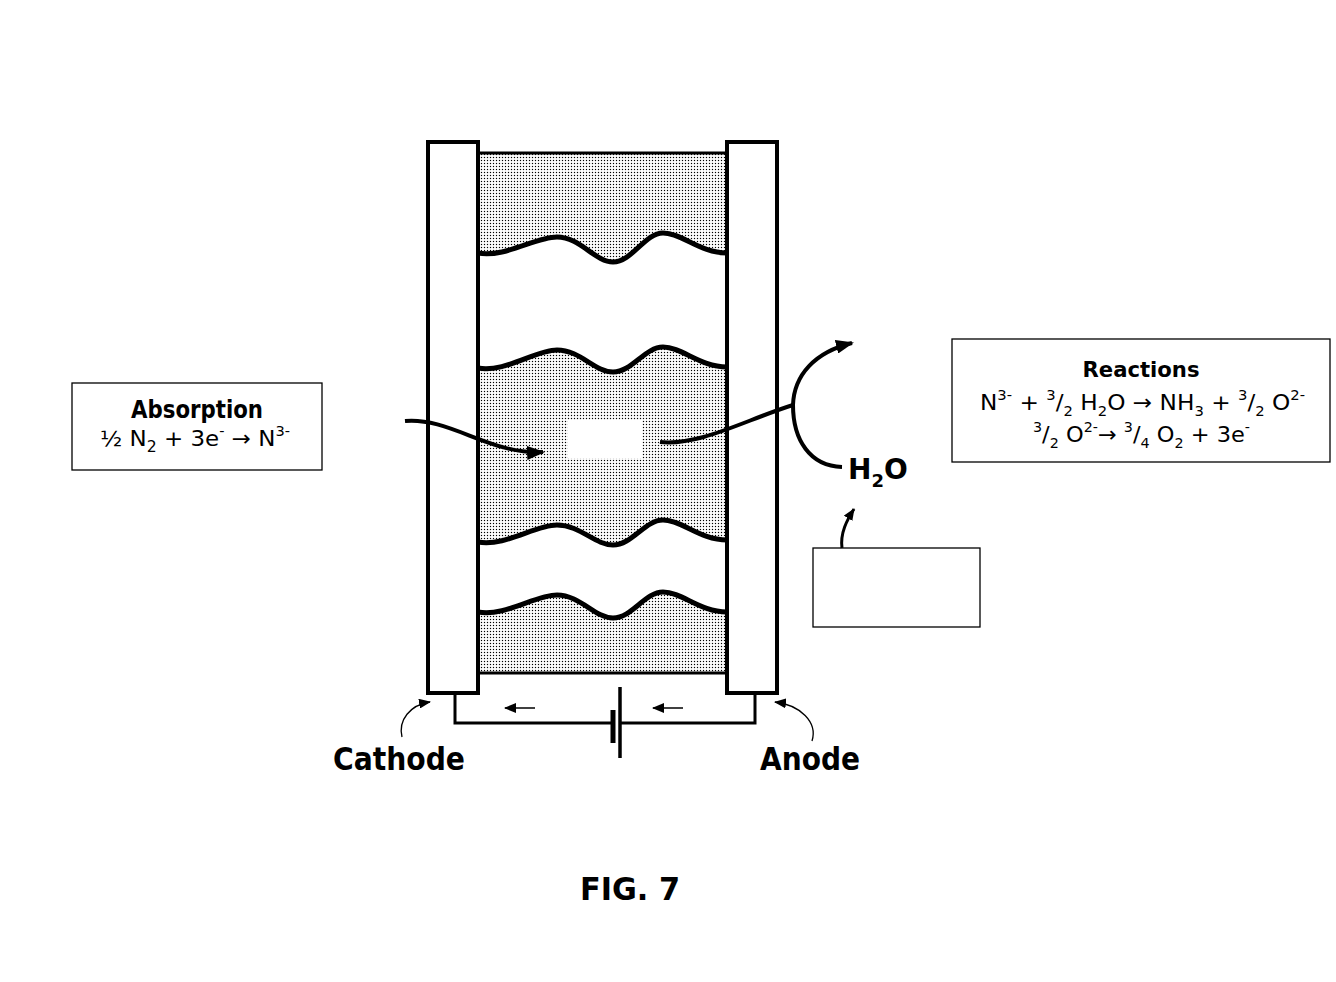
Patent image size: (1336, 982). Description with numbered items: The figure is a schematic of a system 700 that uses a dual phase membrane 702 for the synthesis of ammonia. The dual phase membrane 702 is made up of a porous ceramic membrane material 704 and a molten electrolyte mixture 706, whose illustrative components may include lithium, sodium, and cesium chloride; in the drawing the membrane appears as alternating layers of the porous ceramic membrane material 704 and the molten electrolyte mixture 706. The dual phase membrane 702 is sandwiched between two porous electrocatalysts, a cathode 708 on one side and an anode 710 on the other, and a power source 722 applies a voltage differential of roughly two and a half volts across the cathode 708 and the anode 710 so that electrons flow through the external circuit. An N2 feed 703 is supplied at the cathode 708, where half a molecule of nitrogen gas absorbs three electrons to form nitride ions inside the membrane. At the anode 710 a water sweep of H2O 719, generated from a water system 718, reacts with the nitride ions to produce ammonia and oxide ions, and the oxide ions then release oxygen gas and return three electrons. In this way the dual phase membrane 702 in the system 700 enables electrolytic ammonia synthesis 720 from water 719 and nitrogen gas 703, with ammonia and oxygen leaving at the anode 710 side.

The system 700 is at (427, 74).
The dual phase membrane 702 is at (602, 371).
The N2 feed 703 is at (444, 452).
The porous ceramic membrane material 704 is at (584, 318).
The molten electrolyte mixture 706 is at (584, 205).
The cathode 708 is at (443, 251).
The anode 710 is at (760, 220).
The water system 718 is at (896, 597).
The H2O 719 is at (906, 579).
The ammonia synthesis 720 is at (922, 296).
The power source 722 is at (630, 803).